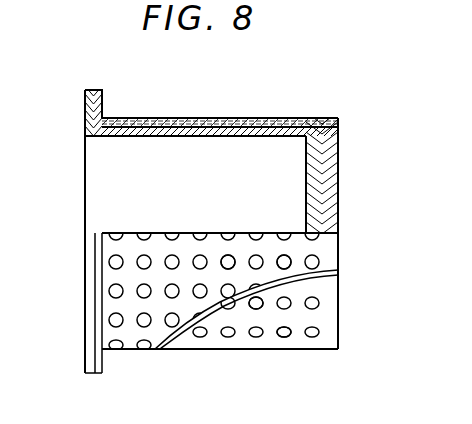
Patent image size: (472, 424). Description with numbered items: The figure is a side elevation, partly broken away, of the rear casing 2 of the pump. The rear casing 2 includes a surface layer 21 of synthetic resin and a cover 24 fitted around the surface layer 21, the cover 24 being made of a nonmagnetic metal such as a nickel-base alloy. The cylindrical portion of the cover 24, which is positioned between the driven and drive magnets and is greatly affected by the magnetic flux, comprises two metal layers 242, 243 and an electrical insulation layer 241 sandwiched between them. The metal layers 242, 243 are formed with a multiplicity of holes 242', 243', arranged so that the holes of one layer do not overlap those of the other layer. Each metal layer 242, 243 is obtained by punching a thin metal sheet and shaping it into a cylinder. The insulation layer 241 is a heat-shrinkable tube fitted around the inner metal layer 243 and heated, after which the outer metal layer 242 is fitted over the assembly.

The rear casing 2 is at (155, 118).
The surface layer 21 is at (88, 137).
The cover 24 is at (338, 140).
The electrical insulation layer 241 is at (283, 117).
The metal layer 242 is at (258, 209).
The holes 242' is at (256, 222).
The metal layer 243 is at (298, 236).
The holes 243' is at (259, 341).